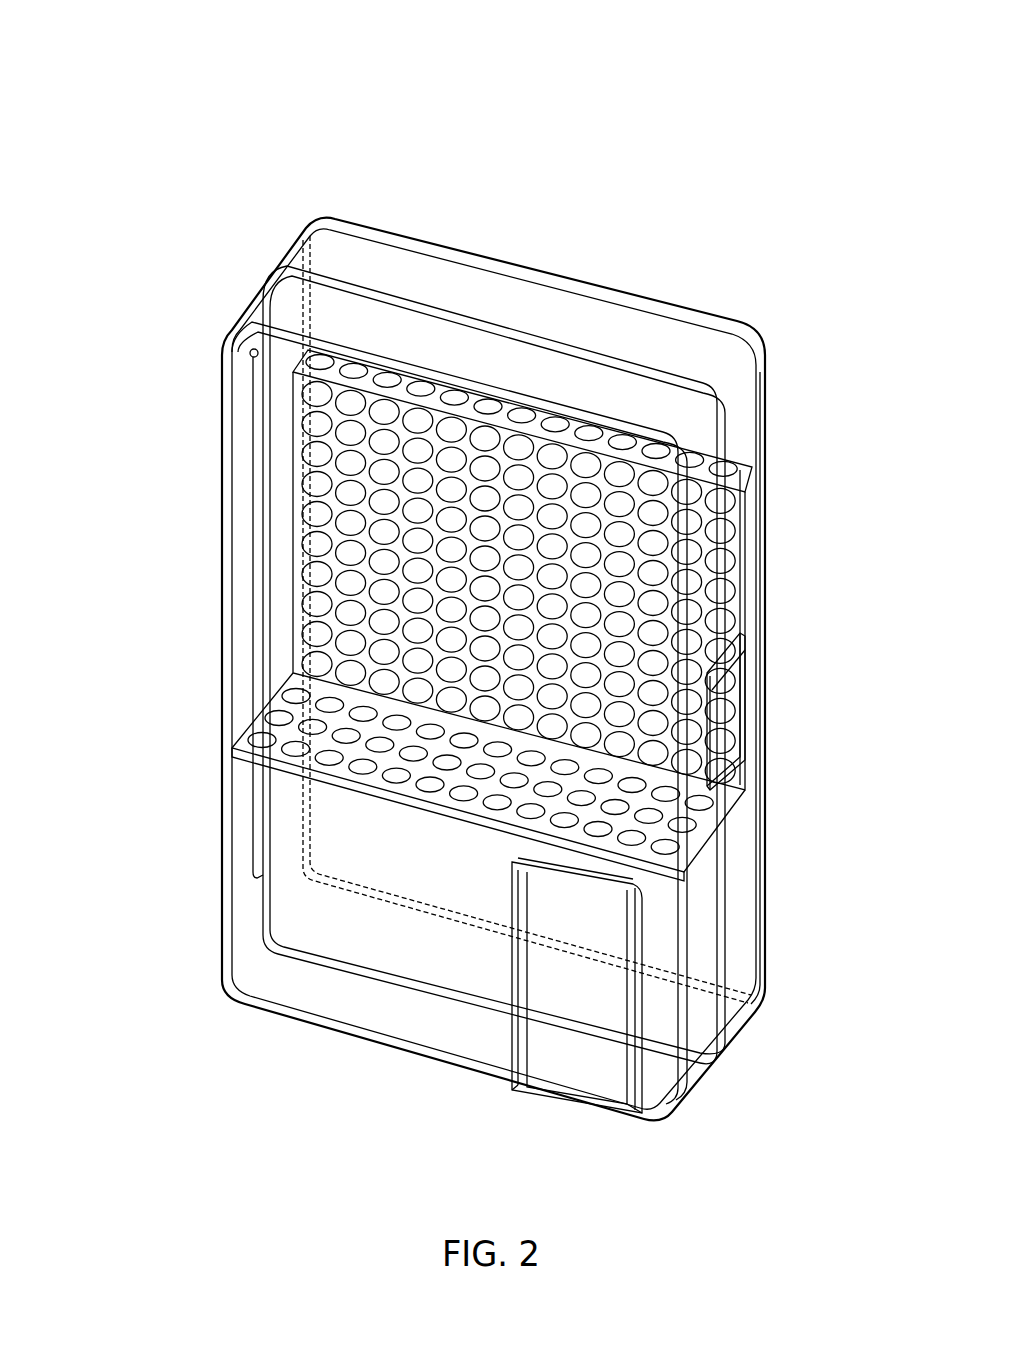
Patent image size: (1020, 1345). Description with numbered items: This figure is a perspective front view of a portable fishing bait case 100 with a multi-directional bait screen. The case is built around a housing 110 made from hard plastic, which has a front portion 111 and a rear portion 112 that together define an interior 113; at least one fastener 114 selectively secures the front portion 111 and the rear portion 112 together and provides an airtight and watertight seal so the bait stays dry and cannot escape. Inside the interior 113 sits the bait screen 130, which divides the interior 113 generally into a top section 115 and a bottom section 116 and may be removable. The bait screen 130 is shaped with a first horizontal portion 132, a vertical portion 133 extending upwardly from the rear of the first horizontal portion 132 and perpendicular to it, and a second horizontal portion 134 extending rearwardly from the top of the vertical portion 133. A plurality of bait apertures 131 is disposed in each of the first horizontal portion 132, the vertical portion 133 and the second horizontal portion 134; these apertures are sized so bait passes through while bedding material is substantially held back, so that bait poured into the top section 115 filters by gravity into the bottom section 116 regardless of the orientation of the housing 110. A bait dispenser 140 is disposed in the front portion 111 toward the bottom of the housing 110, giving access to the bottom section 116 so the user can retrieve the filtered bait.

The portable fishing bait case 100 is at (747, 82).
The housing 110 is at (280, 290).
The front portion 111 is at (657, 405).
The rear portion 112 is at (737, 357).
The interior 113 is at (372, 934).
The fastener 114 is at (740, 712).
The top section 115 is at (433, 347).
The bottom section 116 is at (447, 902).
The bait screen 130 is at (377, 381).
The bait apertures 131 is at (517, 480).
The first horizontal portion 132 is at (647, 843).
The vertical portion 133 is at (327, 545).
The second horizontal portion 134 is at (573, 430).
The bait dispenser 140 is at (588, 1057).